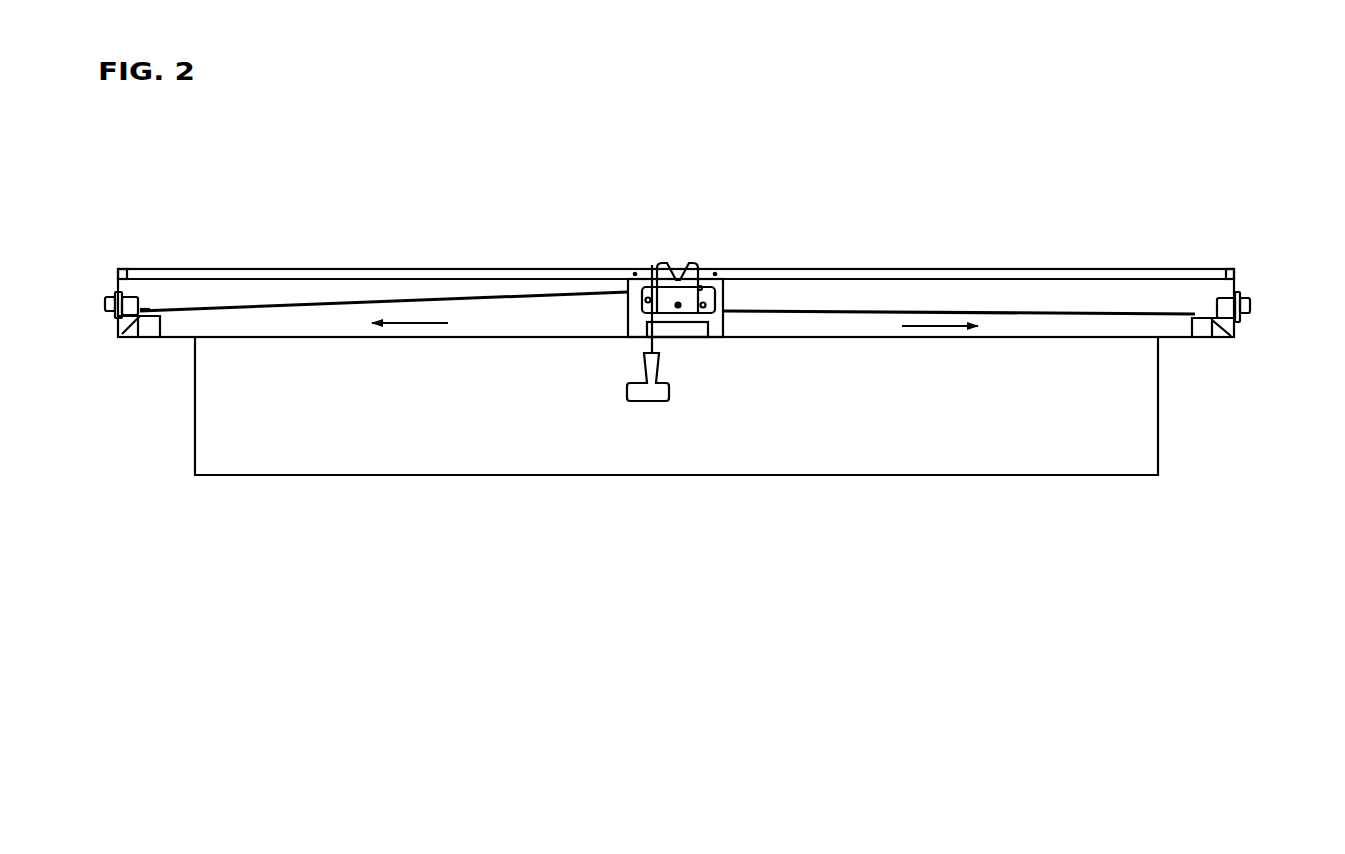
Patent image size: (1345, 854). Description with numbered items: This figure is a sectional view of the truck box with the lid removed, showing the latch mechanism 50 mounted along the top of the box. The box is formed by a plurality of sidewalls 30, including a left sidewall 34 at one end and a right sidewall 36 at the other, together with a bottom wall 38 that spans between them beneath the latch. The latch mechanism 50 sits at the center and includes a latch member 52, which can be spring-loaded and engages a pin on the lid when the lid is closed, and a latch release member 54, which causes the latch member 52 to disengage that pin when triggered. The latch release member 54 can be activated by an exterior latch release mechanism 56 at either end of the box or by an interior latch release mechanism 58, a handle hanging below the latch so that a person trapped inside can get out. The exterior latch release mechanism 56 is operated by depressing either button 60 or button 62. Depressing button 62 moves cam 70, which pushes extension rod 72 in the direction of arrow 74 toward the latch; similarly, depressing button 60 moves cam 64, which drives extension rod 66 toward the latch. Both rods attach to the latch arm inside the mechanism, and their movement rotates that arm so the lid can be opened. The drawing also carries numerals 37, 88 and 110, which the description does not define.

The sidewalls 30 is at (195, 407).
The left sidewall 34 is at (1158, 393).
The right sidewall 36 is at (195, 377).
The inner panel 37 is at (879, 406).
The bottom wall 38 is at (800, 476).
The latch mechanism 50 is at (694, 243).
The latch member 52 is at (676, 272).
The latch release member 54 is at (558, 238).
The exterior latch release mechanism 56 is at (95, 303).
The interior latch release mechanism 58 is at (678, 373).
The button 60 is at (1241, 321).
The button 62 is at (115, 294).
The cam 64 is at (1210, 312).
The extension rod 66 is at (993, 312).
The cam 70 is at (146, 314).
The extension rod 72 is at (305, 305).
The arrow 74 is at (422, 324).
The right cable motion arrow 88 is at (937, 327).
The nut 110 is at (107, 310).